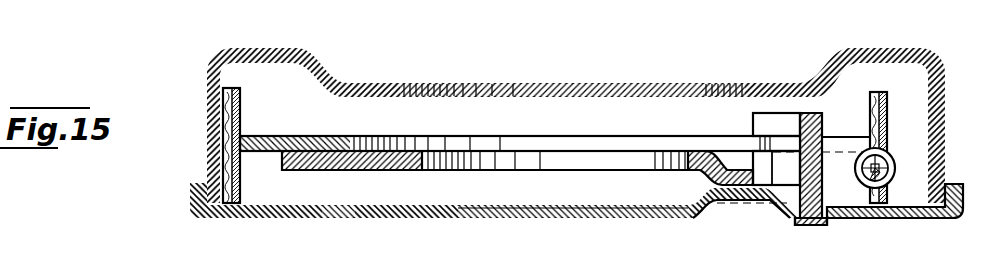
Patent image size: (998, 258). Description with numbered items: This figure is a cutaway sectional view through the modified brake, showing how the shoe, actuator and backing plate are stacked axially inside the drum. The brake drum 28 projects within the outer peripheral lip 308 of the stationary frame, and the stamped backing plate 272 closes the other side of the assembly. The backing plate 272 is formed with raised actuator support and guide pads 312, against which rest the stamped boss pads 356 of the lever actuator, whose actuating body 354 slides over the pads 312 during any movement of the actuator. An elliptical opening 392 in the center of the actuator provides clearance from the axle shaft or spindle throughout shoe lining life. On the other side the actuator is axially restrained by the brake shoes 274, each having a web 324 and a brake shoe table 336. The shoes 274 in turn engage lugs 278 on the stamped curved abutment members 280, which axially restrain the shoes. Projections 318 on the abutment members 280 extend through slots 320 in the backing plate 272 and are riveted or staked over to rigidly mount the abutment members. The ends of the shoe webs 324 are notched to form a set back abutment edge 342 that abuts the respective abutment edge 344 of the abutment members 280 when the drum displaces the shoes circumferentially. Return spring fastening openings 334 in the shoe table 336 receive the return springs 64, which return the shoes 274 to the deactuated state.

The brake drum 28 is at (212, 72).
The brake shoe table 336 is at (241, 93).
The web 324 is at (270, 137).
The actuating body 354 is at (397, 118).
The elliptical opening 392 is at (428, 152).
The boss pads 356 is at (728, 160).
The brake shoes 274 is at (244, 166).
The backing plate 272 is at (404, 218).
The actuator support and guide pads 312 is at (730, 205).
The slots 320 is at (803, 226).
The projections 318 is at (820, 226).
The lugs 278 is at (757, 125).
The abutment edge 344 is at (760, 133).
The set back abutment edge 342 is at (757, 157).
The abutment members 280 is at (820, 127).
The return springs 64 is at (888, 158).
The return spring fastening openings 334 is at (889, 183).
The outer peripheral lip 308 is at (957, 183).